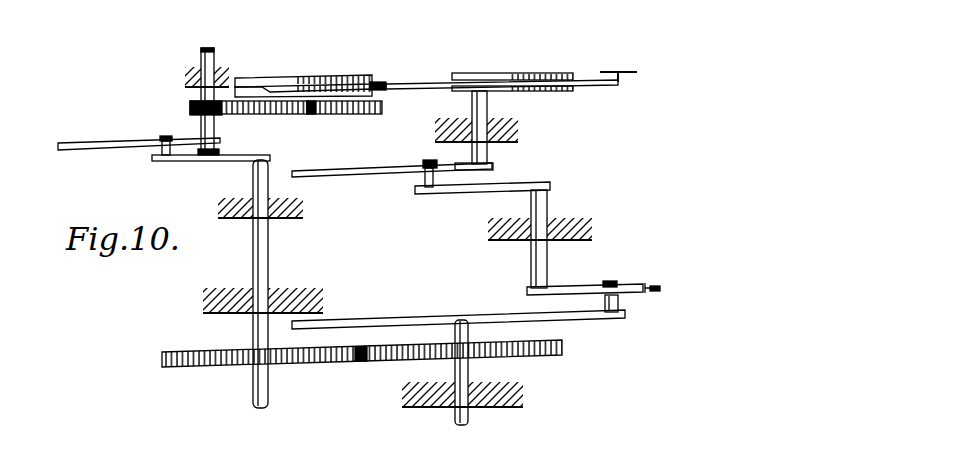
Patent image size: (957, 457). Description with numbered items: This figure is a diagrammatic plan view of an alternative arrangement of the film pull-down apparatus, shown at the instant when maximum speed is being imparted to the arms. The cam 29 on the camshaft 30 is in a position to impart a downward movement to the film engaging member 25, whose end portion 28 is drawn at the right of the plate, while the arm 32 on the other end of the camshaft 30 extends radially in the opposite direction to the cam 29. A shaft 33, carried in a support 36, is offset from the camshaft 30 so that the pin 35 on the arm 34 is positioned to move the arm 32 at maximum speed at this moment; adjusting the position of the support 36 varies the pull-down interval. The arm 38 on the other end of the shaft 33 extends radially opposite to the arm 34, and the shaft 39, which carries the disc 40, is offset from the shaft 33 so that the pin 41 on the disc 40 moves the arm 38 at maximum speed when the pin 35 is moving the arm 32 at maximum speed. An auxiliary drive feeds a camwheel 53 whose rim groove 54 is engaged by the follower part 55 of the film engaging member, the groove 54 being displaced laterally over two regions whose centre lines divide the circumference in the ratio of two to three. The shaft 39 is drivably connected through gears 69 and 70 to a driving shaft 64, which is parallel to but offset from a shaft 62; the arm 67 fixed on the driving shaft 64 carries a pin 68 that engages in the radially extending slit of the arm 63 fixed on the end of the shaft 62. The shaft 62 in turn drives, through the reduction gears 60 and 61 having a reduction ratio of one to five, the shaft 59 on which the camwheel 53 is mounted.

The film engaging member 25 is at (424, 83).
The hook end 28 is at (614, 71).
The cam 29 is at (494, 73).
The camshaft 30 is at (488, 102).
The arm 32 is at (335, 164).
The shaft 33 is at (548, 200).
The arm 34 is at (458, 194).
The pin 35 is at (423, 160).
The support 36 is at (592, 232).
The arm 38 is at (632, 298).
The shaft 39 is at (470, 417).
The disc 40 is at (398, 320).
The pin 41 is at (610, 281).
The camwheel 53 is at (312, 77).
The groove 54 is at (290, 88).
The follower part 55 is at (378, 83).
The shaft 59 is at (314, 114).
The gear 60 is at (266, 114).
The gear 61 is at (190, 108).
The shaft 62 is at (200, 52).
The arm 63 is at (82, 151).
The driving shaft 64 is at (269, 254).
The arm 67 is at (178, 162).
The pin 68 is at (160, 138).
The gear 69 is at (310, 367).
The gear 70 is at (543, 356).